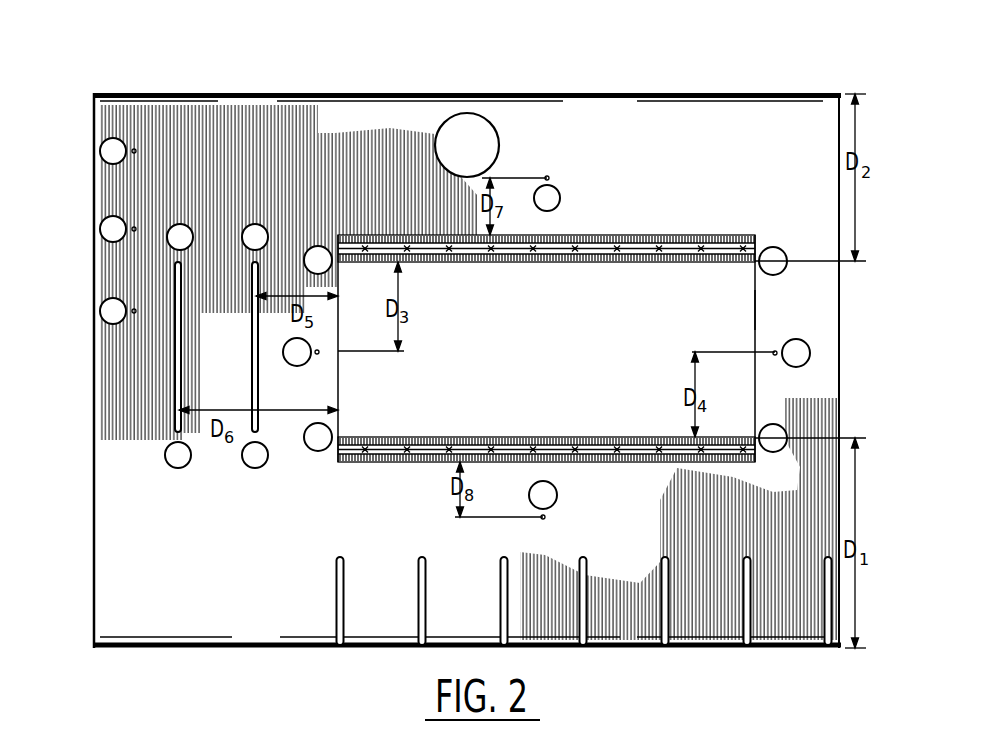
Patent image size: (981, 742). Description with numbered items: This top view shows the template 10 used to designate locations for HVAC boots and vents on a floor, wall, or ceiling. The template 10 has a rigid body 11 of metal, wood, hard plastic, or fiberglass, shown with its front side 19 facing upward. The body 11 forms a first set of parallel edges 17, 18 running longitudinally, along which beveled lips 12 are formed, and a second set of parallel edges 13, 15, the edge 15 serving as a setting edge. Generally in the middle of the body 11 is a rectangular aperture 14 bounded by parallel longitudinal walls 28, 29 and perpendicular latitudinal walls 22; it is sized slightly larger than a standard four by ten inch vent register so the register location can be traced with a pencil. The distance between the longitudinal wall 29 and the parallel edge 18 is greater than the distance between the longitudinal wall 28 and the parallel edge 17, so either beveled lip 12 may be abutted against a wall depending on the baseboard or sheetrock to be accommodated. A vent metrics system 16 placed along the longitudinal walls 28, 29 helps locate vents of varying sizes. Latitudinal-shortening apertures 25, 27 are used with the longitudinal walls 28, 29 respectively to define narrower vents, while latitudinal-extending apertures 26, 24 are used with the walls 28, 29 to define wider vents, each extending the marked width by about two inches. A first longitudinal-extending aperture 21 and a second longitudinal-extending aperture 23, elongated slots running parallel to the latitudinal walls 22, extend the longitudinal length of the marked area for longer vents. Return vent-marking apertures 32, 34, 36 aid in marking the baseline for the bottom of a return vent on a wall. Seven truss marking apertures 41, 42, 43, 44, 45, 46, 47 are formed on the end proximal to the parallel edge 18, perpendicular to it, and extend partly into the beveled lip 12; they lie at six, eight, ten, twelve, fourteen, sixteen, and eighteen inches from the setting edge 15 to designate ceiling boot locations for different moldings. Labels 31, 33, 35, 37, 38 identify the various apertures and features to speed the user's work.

The template 10 is at (211, 70).
The body 11 is at (528, 110).
The beveled lips 12 is at (790, 92).
The parallel edge 13 is at (840, 295).
The rectangular aperture 14 is at (378, 236).
The setting edge 15 is at (93, 600).
The vent metrics system 16 is at (712, 235).
The parallel edge 17 is at (373, 93).
The parallel edge 18 is at (225, 648).
The front side 19 is at (722, 110).
The first longitudinal-extending aperture 21 is at (252, 357).
The latitudinal walls 22 is at (338, 300).
The second longitudinal-extending aperture 23 is at (175, 363).
The latitudinal-extending aperture 24 is at (549, 178).
The latitudinal-shortening aperture 25 is at (318, 354).
The latitudinal-extending aperture 26 is at (545, 517).
The latitudinal-shortening aperture 27 is at (775, 355).
The longitudinal wall 28 is at (482, 262).
The longitudinal wall 29 is at (475, 437).
The label 31 is at (243, 450).
The return vent-marking aperture 32 is at (136, 311).
The label 33 is at (166, 450).
The return vent-marking aperture 34 is at (136, 229).
The label 35 is at (811, 352).
The return vent-marking aperture 36 is at (136, 151).
The label 37 is at (560, 197).
The label 38 is at (100, 151).
The truss marking aperture 41 is at (336, 612).
The truss marking aperture 42 is at (418, 612).
The truss marking aperture 43 is at (500, 612).
The truss marking aperture 44 is at (579, 612).
The truss marking aperture 45 is at (661, 612).
The truss marking aperture 46 is at (743, 612).
The truss marking aperture 47 is at (824, 612).